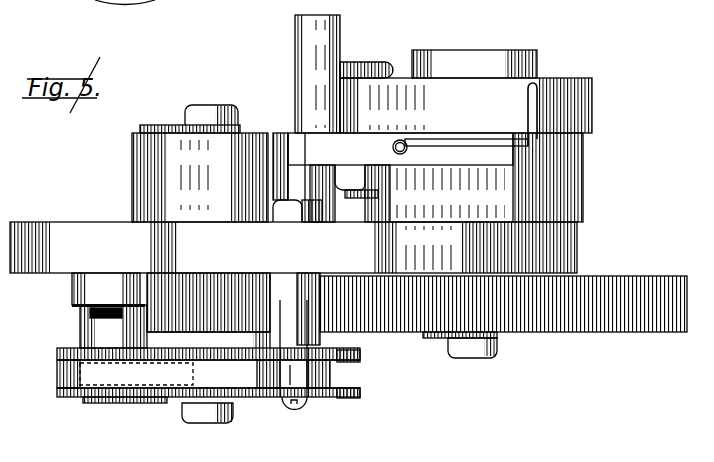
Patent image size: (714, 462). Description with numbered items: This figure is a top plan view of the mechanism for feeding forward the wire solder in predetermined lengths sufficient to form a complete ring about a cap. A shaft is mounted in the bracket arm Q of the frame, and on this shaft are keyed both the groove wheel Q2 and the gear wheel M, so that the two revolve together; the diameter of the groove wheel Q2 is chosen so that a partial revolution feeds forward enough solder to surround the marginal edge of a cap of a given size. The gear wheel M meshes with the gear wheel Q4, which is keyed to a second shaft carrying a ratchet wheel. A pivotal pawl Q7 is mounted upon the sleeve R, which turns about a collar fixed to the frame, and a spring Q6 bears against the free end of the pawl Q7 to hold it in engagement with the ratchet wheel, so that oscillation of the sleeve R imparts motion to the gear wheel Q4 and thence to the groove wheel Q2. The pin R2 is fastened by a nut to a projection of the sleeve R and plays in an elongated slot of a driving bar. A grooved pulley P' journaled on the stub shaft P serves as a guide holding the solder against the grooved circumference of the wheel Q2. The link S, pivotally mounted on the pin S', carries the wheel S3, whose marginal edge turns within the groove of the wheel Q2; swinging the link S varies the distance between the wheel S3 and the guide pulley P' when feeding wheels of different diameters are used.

The pin R2 is at (340, 36).
The sleeve R is at (578, 187).
The spring Q6 is at (437, 139).
The pivotal pawl Q7 is at (497, 121).
The bracket arm Q is at (293, 247).
The gear wheel M is at (222, 296).
The link S is at (87, 293).
The pin S' is at (65, 333).
The groove wheel Q2 is at (77, 397).
The grooved pulley P' is at (278, 373).
The stub shaft P is at (309, 416).
The gear wheel Q4 is at (634, 318).
The wheel S3 is at (189, 13).